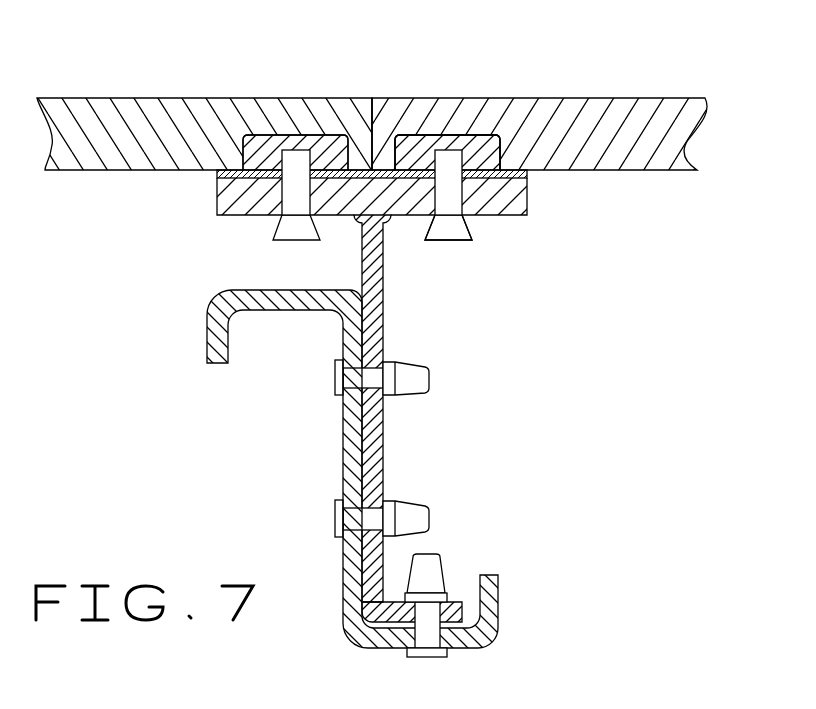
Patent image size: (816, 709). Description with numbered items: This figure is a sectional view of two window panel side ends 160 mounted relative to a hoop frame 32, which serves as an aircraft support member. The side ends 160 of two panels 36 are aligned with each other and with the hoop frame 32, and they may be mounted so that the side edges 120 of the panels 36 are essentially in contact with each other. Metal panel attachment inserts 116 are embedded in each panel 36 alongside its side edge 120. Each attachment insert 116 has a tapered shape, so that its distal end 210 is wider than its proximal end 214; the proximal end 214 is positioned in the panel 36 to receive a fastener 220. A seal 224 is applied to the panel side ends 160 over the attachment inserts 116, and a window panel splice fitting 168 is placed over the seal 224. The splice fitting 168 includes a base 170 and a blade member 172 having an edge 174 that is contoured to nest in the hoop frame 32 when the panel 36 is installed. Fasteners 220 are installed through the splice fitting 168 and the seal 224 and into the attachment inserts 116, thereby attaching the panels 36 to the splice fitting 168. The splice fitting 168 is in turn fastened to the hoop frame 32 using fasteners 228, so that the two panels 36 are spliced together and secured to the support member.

The panel 36 is at (97, 173).
The side edge 120 is at (370, 115).
The panel side end 160 is at (318, 97).
The distal end 210 is at (484, 158).
The panel attachment insert 116 is at (490, 166).
The base 170 is at (243, 217).
The splice fitting 168 is at (385, 460).
The blade member 172 is at (383, 340).
The fastener 228 is at (430, 514).
The hoop frame 32 is at (343, 481).
The edge 174 is at (457, 603).
The seal 224 is at (222, 173).
The proximal end 214 is at (485, 165).
The fastener 220 is at (446, 243).